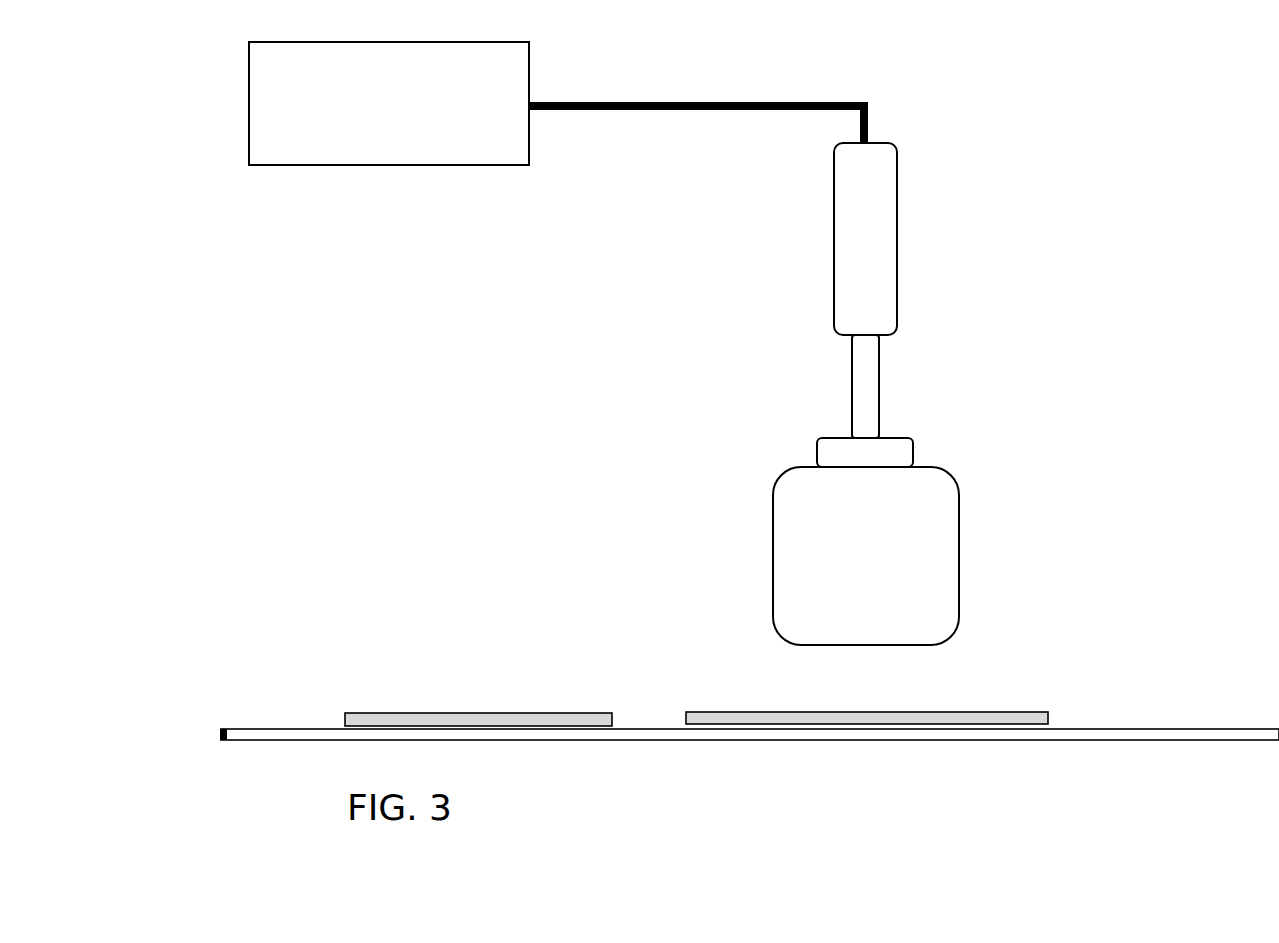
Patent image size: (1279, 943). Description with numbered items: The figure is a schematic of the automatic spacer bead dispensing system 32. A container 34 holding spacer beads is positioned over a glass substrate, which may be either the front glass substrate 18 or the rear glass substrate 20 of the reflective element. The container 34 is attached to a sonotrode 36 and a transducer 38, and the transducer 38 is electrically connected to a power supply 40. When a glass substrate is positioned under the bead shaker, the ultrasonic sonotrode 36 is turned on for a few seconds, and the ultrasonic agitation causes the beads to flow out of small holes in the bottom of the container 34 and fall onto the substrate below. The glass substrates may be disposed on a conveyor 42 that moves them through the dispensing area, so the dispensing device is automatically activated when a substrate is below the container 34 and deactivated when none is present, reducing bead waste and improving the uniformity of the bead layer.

The bead dispensing system 32 is at (1000, 90).
The power supply 40 is at (338, 187).
The transducer 38 is at (941, 216).
The sonotrode 36 is at (909, 383).
The container 34 is at (999, 527).
The conveyor 42 is at (635, 754).
The front glass substrate 18 is at (1084, 717).
The rear glass substrate 20 is at (867, 718).